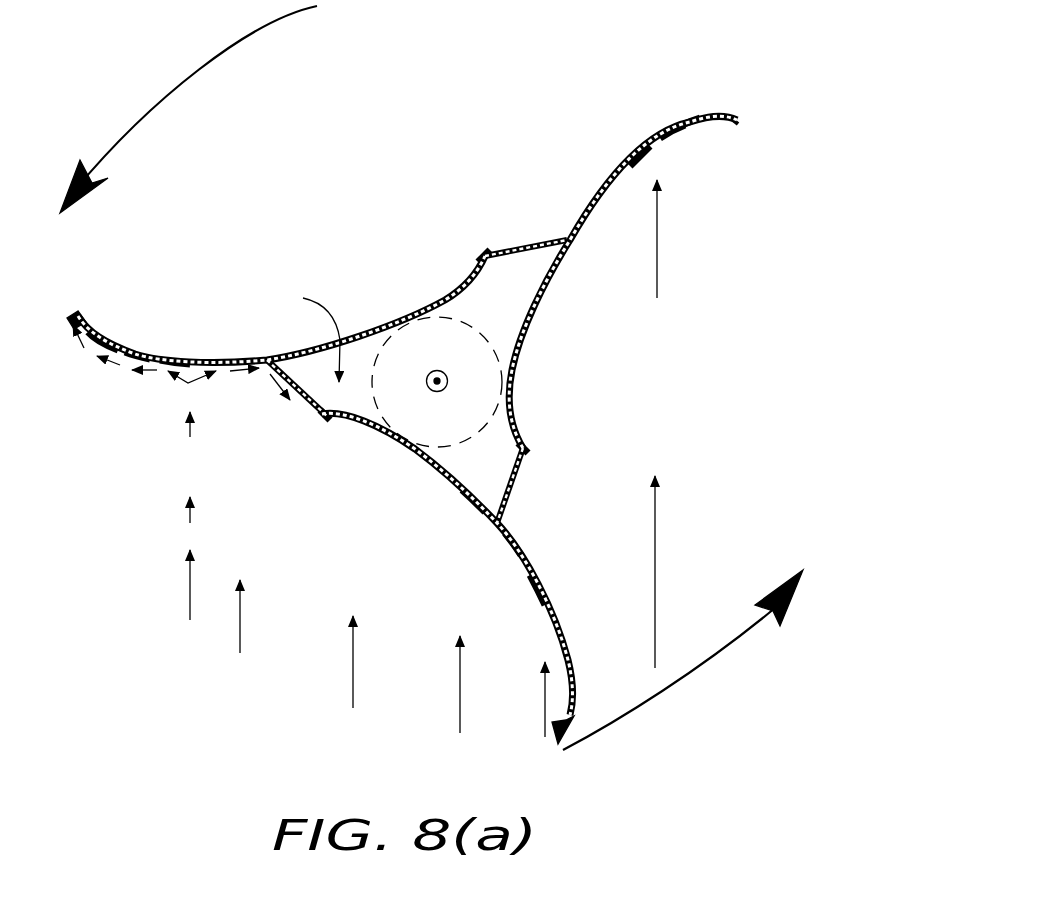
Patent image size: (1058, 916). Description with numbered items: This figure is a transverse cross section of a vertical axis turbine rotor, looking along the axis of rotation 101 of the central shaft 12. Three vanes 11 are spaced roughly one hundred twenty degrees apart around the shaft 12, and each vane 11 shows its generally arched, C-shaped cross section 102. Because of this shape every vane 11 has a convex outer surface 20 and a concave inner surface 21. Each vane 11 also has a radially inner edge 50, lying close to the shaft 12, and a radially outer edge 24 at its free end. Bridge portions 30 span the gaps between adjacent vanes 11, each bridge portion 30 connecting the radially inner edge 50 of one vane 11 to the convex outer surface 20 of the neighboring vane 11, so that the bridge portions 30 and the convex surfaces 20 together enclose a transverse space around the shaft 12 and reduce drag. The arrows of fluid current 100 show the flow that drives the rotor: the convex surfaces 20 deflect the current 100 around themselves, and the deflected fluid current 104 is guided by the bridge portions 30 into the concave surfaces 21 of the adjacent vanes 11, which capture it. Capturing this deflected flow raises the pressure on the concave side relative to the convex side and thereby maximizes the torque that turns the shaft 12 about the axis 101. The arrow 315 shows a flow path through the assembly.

The vane 11 is at (96, 332).
The central shaft 12 is at (493, 330).
The convex outer surface 20 is at (90, 348).
The concave inner surface 21 is at (135, 347).
The radially outer edge 24 is at (70, 312).
The bridge portion 30 is at (312, 410).
The radially inner edge 50 is at (327, 420).
The fluid current 100 is at (657, 240).
The axis of rotation 101 is at (430, 386).
The C-shaped cross section 102 is at (176, 353).
The deflected fluid current 104 is at (180, 394).
The flow path arrow 315 is at (310, 333).